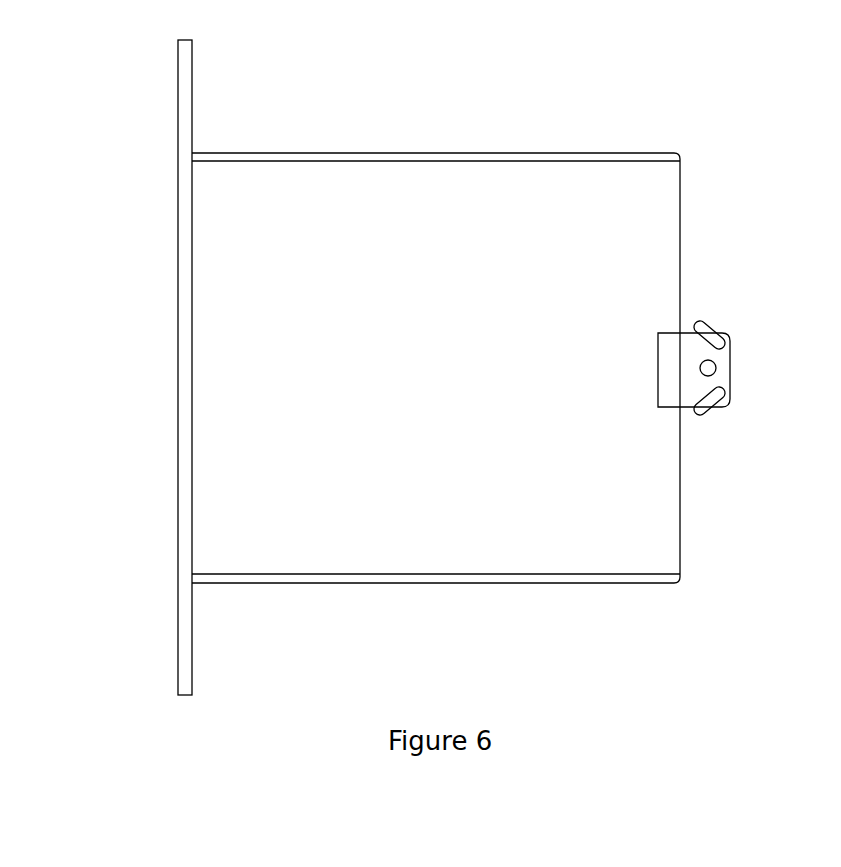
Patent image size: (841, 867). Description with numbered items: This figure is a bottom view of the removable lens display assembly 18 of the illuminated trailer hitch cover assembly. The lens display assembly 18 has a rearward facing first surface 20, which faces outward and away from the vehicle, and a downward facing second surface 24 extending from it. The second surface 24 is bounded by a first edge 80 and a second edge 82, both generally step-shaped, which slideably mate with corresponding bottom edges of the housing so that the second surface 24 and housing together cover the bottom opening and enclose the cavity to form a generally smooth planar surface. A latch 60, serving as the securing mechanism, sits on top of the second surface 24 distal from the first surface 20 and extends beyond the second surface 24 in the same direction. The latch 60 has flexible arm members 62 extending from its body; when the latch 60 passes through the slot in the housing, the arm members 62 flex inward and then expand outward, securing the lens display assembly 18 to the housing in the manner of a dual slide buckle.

The lens display assembly 18 is at (742, 133).
The first surface 20 is at (188, 68).
The second surface 24 is at (664, 227).
The latch 60 is at (733, 365).
The arm members 62 is at (708, 324).
The first edge 80 is at (546, 153).
The second edge 82 is at (590, 587).